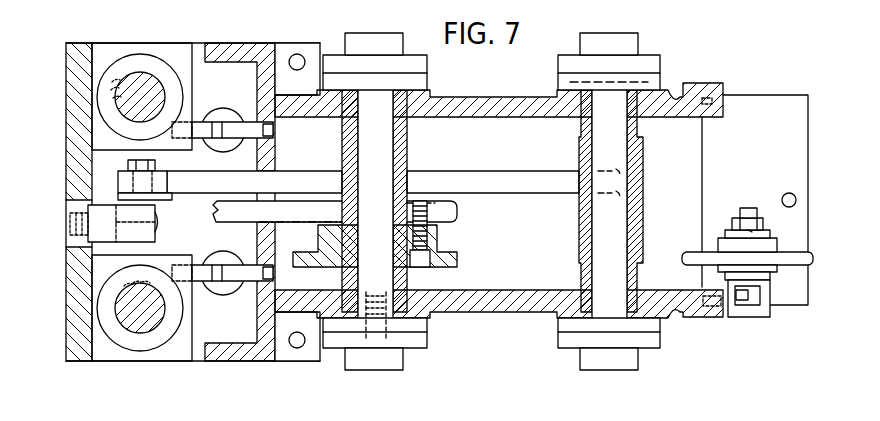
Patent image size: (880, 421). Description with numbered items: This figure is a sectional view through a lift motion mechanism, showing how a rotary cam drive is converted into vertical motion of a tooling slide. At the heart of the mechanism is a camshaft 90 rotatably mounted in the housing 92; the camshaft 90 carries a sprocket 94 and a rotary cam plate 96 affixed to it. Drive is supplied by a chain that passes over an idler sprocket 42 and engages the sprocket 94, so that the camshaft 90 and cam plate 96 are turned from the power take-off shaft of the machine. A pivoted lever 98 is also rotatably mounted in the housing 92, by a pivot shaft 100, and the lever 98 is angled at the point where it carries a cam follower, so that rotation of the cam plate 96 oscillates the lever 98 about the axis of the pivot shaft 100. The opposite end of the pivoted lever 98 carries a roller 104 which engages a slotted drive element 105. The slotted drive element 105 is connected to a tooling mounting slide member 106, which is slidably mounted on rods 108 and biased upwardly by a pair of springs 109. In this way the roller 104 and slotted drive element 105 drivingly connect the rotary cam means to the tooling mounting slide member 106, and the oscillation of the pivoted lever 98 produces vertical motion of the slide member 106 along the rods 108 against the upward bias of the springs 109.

The idler sprocket 42 is at (800, 253).
The camshaft 90 is at (372, 283).
The housing 92 is at (478, 96).
The sprocket 94 is at (458, 256).
The rotary cam plate 96 is at (458, 211).
The pivoted lever 98 is at (502, 172).
The pivot shaft 100 is at (614, 216).
The roller 104 is at (157, 207).
The slotted drive element 105 is at (112, 202).
The tooling mounting slide member 106 is at (68, 193).
The rods 108 is at (140, 78).
The springs 109 is at (241, 108).